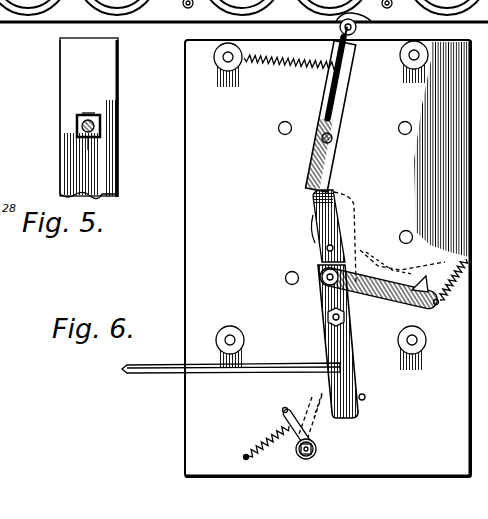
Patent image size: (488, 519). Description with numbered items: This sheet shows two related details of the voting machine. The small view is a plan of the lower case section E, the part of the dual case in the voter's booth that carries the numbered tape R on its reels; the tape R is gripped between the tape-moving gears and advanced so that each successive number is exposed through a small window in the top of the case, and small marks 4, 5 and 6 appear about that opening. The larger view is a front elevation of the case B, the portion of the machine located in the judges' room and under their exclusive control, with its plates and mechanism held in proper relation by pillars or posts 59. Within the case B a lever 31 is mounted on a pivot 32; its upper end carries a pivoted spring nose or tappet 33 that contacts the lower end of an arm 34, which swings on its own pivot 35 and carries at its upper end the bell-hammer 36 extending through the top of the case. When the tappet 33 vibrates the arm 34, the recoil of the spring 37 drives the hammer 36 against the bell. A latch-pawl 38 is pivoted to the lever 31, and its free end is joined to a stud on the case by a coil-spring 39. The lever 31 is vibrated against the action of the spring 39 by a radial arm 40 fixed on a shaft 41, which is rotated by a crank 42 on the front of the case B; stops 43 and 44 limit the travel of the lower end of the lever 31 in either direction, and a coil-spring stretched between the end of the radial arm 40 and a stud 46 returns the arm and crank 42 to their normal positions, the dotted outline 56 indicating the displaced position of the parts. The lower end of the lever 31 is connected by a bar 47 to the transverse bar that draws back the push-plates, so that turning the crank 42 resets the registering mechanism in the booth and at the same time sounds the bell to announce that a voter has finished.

In FIG. 5, the slot mark 4 is at (88, 108).
In FIG. 5, the hole in plate 5 is at (88, 126).
In FIG. 5, the plate mark 6 is at (88, 145).
In FIG. 5, the case section E is at (107, 102).
In FIG. 5, the tape R is at (78, 134).
In FIG. 6, the case B is at (304, 237).
In FIG. 6, the lever 31 is at (355, 393).
In FIG. 6, the pivot 32 is at (345, 318).
In FIG. 6, the spring nose or tappet 33 is at (316, 202).
In FIG. 6, the arm 34 is at (341, 130).
In FIG. 6, the pivot 35 is at (322, 140).
In FIG. 6, the bell-hammer 36 is at (360, 29).
In FIG. 6, the spring 37 is at (290, 74).
In FIG. 6, the latch-pawl 38 is at (364, 280).
In FIG. 6, the coil-spring 39 is at (454, 284).
In FIG. 6, the radial arm 40 is at (293, 451).
In FIG. 6, the shaft 41 is at (316, 449).
In FIG. 6, the crank 42 is at (265, 438).
In FIG. 6, the stop 43 is at (292, 417).
In FIG. 6, the stop 44 is at (382, 393).
In FIG. 6, the stud 46 is at (231, 458).
In FIG. 6, the bar 47 is at (171, 374).
In FIG. 6, the lug 56 is at (398, 263).
In FIG. 6, the pillars or posts 59 is at (232, 327).